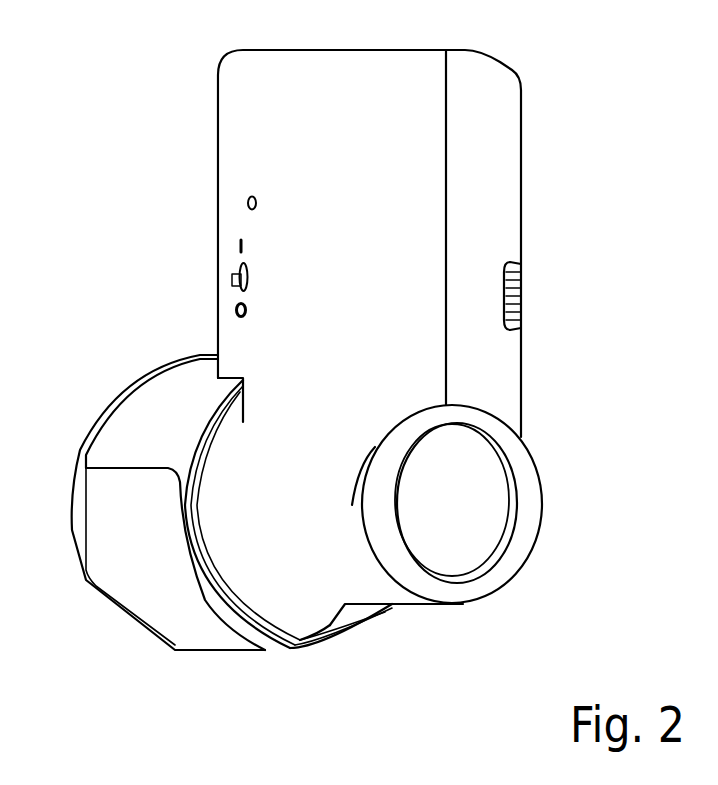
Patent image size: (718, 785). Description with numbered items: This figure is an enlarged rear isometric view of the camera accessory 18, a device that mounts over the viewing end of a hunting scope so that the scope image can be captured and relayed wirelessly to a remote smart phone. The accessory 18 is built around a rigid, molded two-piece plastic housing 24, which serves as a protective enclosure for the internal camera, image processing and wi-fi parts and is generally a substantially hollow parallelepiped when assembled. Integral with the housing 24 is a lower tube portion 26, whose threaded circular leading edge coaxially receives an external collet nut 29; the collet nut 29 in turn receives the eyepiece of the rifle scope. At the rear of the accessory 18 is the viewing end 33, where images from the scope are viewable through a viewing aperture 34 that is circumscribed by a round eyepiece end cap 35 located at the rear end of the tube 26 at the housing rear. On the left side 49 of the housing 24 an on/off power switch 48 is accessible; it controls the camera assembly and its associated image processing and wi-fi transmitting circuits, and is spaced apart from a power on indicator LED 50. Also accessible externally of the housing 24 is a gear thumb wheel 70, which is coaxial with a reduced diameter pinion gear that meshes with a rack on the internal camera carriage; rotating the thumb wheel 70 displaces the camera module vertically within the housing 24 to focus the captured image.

The camera accessory 18 is at (128, 195).
The housing 24 is at (540, 180).
The lower tube portion 26 is at (287, 620).
The collet nut 29 is at (172, 400).
The viewing end 33 is at (542, 588).
The viewing aperture 34 is at (468, 553).
The eyepiece end cap 35 is at (538, 515).
The on/off power switch 48 is at (248, 274).
The left side 49 is at (316, 128).
The power on indicator LED 50 is at (258, 202).
The gear thumb wheel 70 is at (523, 291).